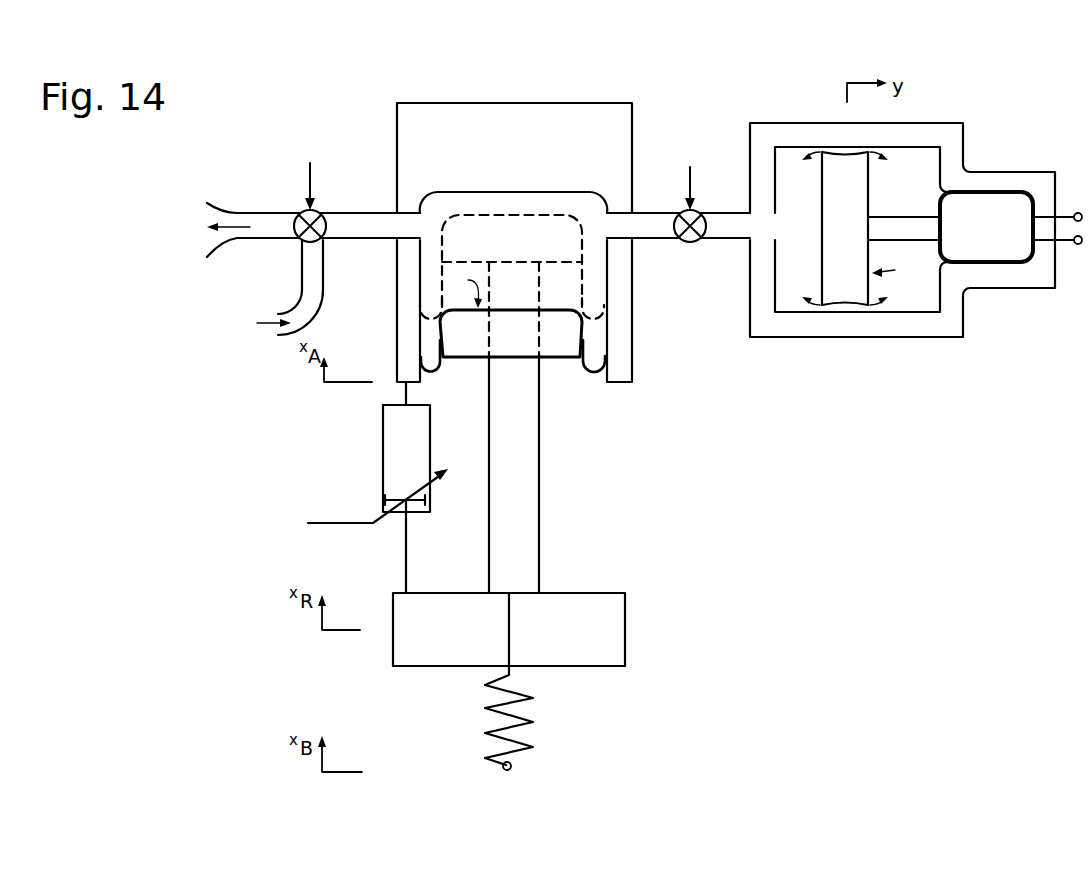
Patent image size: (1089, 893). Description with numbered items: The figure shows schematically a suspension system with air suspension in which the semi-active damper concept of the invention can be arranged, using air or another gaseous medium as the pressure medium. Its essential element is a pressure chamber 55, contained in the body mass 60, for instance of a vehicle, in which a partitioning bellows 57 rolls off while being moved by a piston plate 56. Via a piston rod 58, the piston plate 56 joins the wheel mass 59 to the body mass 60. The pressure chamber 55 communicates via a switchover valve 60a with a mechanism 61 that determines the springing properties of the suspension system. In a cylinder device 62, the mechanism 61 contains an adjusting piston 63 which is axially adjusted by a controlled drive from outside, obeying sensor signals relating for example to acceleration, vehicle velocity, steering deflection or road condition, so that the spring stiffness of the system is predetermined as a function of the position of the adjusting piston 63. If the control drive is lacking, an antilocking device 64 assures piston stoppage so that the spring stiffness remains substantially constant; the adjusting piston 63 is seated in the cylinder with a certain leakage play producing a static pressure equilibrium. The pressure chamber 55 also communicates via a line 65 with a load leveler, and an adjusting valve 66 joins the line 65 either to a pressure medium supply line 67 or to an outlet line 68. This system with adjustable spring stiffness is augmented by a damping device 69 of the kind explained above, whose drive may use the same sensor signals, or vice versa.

The pressure chamber 55 is at (567, 283).
The piston plate 56 is at (560, 352).
The partitioning bellows 57 is at (583, 323).
The piston rod 58 is at (527, 480).
The wheel mass 59 is at (612, 633).
The body mass 60 is at (575, 115).
The switchover valve 60a is at (687, 238).
The mechanism 61 is at (972, 323).
The cylinder device 62 is at (928, 135).
The adjusting piston 63 is at (837, 288).
The antilocking device 64 is at (1005, 198).
The line 65 is at (348, 222).
The adjusting valve 66 is at (303, 211).
The pressure medium supply line 67 is at (318, 300).
The outlet line 68 is at (238, 242).
The damping device 69 is at (390, 462).